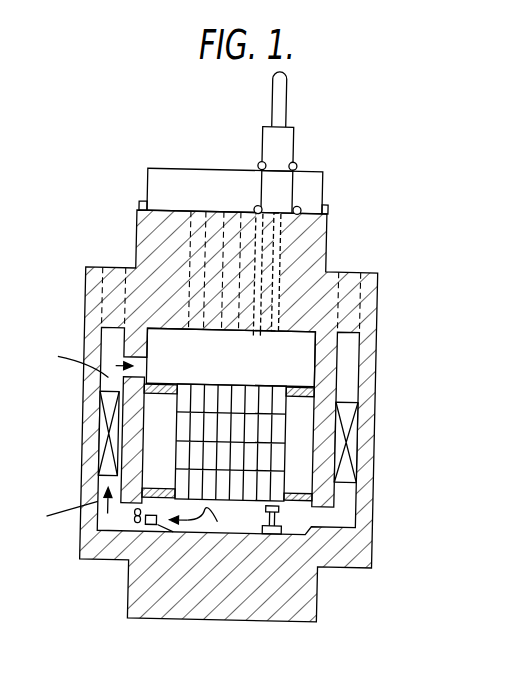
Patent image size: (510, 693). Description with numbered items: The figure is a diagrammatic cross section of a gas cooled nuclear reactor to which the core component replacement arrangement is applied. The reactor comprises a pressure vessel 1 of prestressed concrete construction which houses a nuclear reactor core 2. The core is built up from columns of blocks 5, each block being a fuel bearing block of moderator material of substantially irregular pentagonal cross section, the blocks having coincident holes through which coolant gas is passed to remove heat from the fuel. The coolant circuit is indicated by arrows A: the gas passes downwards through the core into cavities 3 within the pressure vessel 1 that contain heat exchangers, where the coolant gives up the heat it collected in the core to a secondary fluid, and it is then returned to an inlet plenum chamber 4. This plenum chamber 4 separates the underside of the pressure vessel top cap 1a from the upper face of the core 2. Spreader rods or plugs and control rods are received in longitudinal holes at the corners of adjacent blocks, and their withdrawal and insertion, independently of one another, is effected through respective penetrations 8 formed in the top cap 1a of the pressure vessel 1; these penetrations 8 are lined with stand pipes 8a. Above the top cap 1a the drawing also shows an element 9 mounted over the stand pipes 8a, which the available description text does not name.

The pressure vessel 1 is at (241, 346).
The top cap 1a is at (302, 269).
The nuclear reactor core 2 is at (277, 433).
The cavities 3 is at (97, 490).
The inlet plenum chamber 4 is at (231, 377).
The blocks 5 is at (279, 461).
The penetrations 8 is at (267, 256).
The stand pipes 8a is at (256, 333).
The connector plug 9 is at (272, 149).